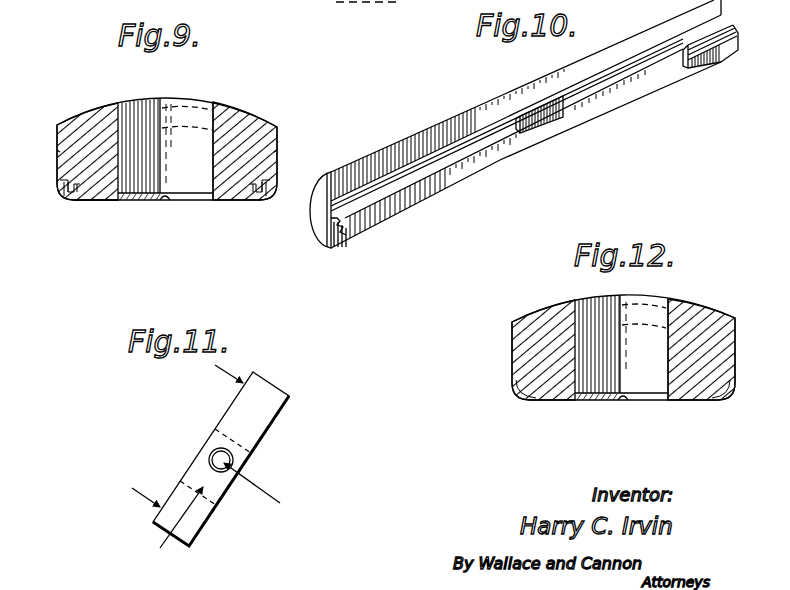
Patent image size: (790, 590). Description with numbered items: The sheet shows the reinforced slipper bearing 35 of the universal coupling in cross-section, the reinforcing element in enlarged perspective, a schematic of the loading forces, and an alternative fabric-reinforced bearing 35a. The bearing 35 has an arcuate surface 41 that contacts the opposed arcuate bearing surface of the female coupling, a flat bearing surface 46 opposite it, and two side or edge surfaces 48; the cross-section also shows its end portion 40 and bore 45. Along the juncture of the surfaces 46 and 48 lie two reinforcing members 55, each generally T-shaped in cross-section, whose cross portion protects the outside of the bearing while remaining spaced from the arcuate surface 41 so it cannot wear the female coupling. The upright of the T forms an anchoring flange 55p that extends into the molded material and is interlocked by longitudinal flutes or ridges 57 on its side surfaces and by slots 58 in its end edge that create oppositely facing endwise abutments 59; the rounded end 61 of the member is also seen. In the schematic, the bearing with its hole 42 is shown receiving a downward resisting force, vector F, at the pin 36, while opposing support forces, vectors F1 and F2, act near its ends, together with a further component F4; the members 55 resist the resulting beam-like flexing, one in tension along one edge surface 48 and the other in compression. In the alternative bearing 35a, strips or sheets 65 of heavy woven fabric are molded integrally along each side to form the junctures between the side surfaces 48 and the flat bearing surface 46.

In FIG. 9, the slipper bearing 35 is at (186, 62).
In FIG. 11, the slipper bearing 35 is at (258, 370).
In FIG. 12, the slipper bearing 35a is at (697, 300).
In FIG. 10, the pin 36 is at (402, 3).
In FIG. 9, the end portion of block 40 is at (112, 106).
In FIG. 9, the arcuate surface 41 is at (264, 118).
In FIG. 11, the threaded hole 42 is at (208, 468).
In FIG. 9, the threaded bore 45 is at (215, 134).
In FIG. 9, the flat bearing surface 46 is at (97, 200).
In FIG. 9, the edge surface 48 is at (57, 152).
In FIG. 10, the edge surface 48 is at (522, 86).
In FIG. 11, the edge surface 48 is at (212, 513).
In FIG. 9, the reinforcing member 55 is at (70, 200).
In FIG. 10, the reinforcing member 55 is at (461, 112).
In FIG. 10, the anchoring flange 55p is at (356, 222).
In FIG. 10, the longitudinal flutes or ridges 57 is at (445, 190).
In FIG. 10, the slot 58 is at (608, 97).
In FIG. 10, the endwise abutment 59 is at (545, 130).
In FIG. 10, the rounded end of bar 61 is at (318, 236).
In FIG. 12, the strip or sheet of heavy woven fabric 65 is at (522, 398).
In FIG. 11, the vector F is at (273, 488).
In FIG. 11, the vector F1 is at (133, 491).
In FIG. 11, the vector F2 is at (214, 380).
In FIG. 11, the force component F4 is at (160, 548).